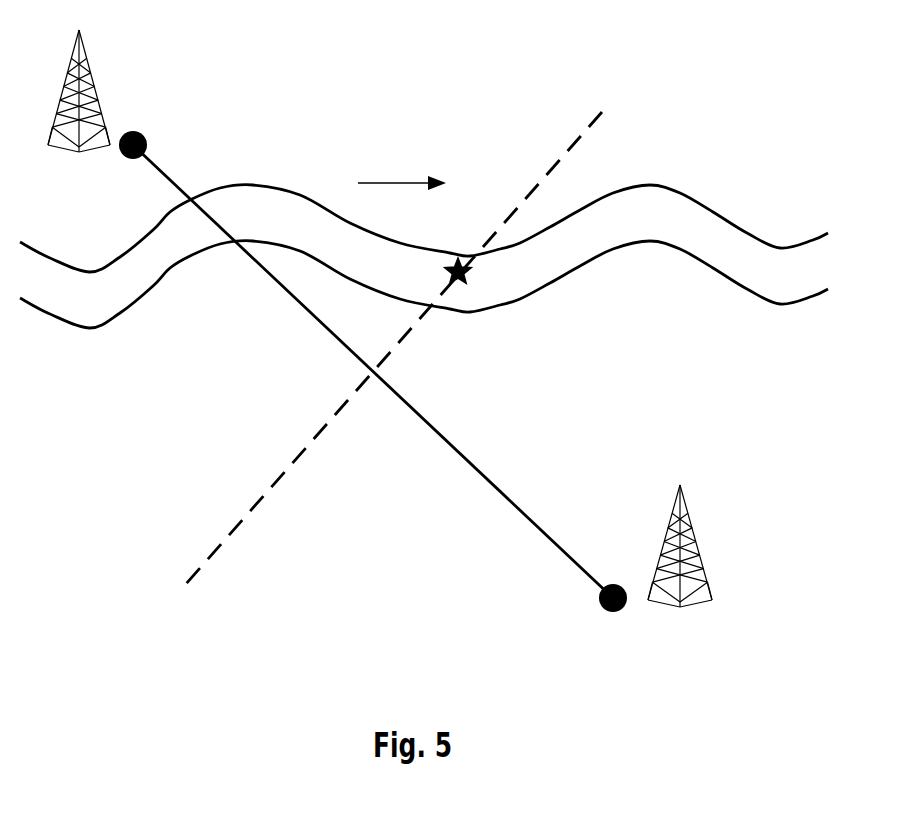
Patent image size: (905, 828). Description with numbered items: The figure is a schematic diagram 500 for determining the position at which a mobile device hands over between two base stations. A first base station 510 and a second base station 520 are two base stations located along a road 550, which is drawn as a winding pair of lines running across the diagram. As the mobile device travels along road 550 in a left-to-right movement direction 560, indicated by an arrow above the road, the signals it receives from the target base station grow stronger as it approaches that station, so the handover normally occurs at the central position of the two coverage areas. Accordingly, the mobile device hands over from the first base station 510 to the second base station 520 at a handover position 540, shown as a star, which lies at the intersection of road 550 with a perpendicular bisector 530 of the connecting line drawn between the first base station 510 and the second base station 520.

The diagram 500 is at (241, 40).
The base station 1 510 is at (75, 181).
The base station 2 520 is at (675, 646).
The perpendicular bisector 530 is at (143, 620).
The handover position 540 is at (453, 344).
The road 550 is at (665, 230).
The movement direction 560 is at (390, 155).